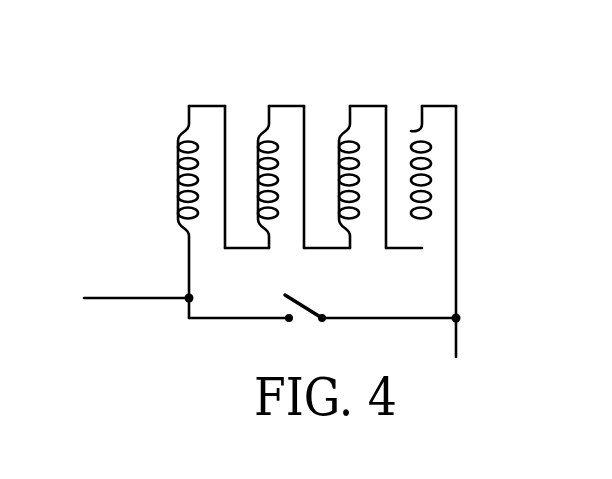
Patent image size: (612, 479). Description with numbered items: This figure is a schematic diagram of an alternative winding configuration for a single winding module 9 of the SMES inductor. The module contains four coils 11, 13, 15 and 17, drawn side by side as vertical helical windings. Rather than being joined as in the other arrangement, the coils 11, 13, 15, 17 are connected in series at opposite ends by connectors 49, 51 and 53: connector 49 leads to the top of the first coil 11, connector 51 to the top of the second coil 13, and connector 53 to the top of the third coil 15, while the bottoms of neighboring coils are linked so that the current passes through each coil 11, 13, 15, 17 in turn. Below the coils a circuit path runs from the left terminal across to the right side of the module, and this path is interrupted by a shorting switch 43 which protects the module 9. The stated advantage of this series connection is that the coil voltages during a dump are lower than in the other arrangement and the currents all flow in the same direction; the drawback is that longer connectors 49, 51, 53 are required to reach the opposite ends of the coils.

The winding module 9 is at (526, 216).
The coil 11 is at (180, 168).
The coil 13 is at (258, 142).
The coil 15 is at (338, 157).
The coil 17 is at (411, 152).
The shorting switch 43 is at (300, 302).
The connector 49 is at (212, 106).
The connector 51 is at (283, 106).
The connector 53 is at (373, 106).